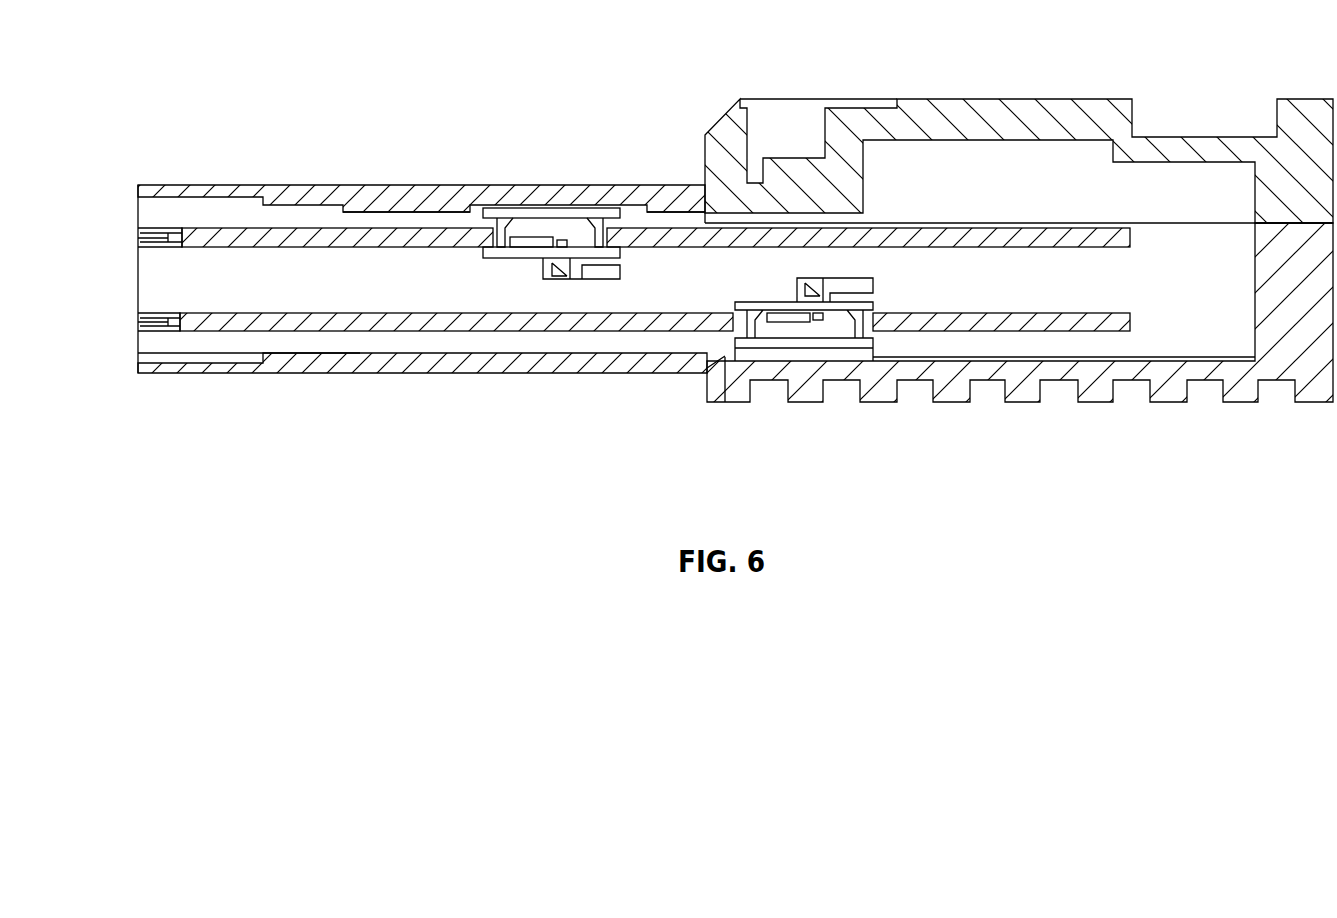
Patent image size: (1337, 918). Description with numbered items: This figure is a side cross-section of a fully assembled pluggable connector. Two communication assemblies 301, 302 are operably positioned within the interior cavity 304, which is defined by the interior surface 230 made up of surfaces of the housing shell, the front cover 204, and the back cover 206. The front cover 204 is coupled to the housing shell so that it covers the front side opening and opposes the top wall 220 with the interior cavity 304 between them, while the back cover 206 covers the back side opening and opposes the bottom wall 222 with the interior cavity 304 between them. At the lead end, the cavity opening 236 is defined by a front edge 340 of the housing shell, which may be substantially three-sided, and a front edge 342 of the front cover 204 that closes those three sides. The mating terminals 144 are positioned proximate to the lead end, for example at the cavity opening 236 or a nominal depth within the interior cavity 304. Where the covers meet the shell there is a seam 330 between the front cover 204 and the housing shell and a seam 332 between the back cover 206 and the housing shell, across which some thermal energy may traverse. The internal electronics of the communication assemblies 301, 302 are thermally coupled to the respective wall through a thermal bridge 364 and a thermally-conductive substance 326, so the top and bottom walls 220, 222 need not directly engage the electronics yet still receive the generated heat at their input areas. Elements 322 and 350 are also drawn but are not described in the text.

The mating terminals 144 is at (155, 332).
The front cover 204 is at (393, 374).
The back cover 206 is at (1071, 99).
The top wall 220 is at (233, 185).
The bottom wall 222 is at (1058, 402).
The interior surface 230 is at (1195, 291).
The cavity opening 236 is at (140, 287).
The communication assembly 301 is at (394, 204).
The communication assembly 302 is at (637, 348).
The interior cavity 304 is at (353, 291).
The plate 322 is at (530, 267).
The thermally-conductive substance 326 is at (518, 207).
The seam 330 is at (352, 368).
The seam 332 is at (1175, 212).
The front edge 340 is at (137, 191).
The front edge 342 is at (137, 366).
The block 350 is at (560, 302).
The thermal bridge 364 is at (580, 225).